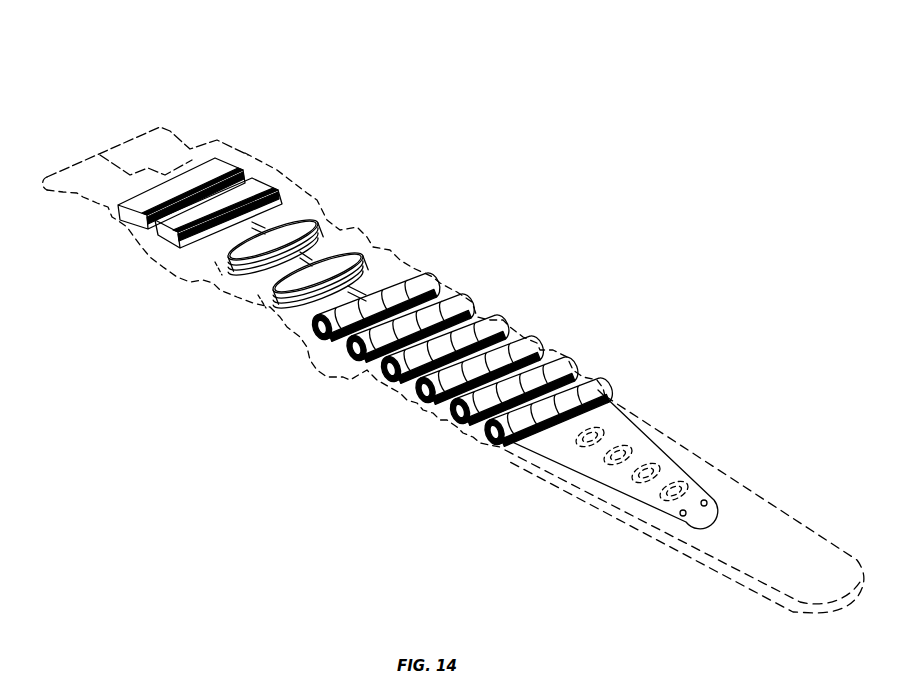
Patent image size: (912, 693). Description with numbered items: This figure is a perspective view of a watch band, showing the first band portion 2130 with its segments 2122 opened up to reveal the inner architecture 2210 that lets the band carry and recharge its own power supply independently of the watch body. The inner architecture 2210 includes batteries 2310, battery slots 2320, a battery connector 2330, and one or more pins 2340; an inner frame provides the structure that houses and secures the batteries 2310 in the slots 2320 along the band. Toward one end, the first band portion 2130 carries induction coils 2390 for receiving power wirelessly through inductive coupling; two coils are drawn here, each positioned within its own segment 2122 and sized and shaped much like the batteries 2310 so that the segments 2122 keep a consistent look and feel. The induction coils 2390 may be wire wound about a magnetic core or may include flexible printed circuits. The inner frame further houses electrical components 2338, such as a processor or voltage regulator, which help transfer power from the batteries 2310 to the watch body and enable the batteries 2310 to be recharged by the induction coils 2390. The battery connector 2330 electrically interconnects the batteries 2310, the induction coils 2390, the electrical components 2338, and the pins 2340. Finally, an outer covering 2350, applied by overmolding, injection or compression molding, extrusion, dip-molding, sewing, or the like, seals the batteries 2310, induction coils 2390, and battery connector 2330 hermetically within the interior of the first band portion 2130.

The first band portion 2130 is at (417, 85).
The segments 2122 is at (113, 218).
The pins 2340 is at (172, 128).
The electrical components 2338 is at (229, 146).
The battery connector 2330 is at (323, 243).
The induction coils 2390 is at (215, 270).
The inner architecture 2210 is at (318, 434).
The battery slots 2320 is at (487, 441).
The batteries 2310 is at (495, 450).
The outer covering 2350 is at (815, 547).